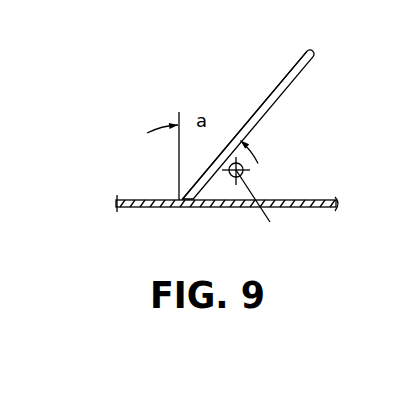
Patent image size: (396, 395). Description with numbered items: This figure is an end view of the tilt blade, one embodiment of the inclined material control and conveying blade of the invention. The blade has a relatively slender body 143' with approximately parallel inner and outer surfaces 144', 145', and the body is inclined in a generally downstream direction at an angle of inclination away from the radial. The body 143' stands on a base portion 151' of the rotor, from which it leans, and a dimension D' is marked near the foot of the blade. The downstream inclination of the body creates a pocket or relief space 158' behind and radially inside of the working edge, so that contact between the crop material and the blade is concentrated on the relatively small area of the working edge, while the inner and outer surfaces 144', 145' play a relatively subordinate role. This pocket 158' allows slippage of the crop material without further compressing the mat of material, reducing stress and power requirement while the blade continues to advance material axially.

The body 143' is at (236, 116).
The inner surface 144' is at (271, 124).
The outer surface 145' is at (245, 116).
The support bar 151' is at (227, 220).
The relief space 158' is at (268, 171).
The offset distance D' is at (262, 207).